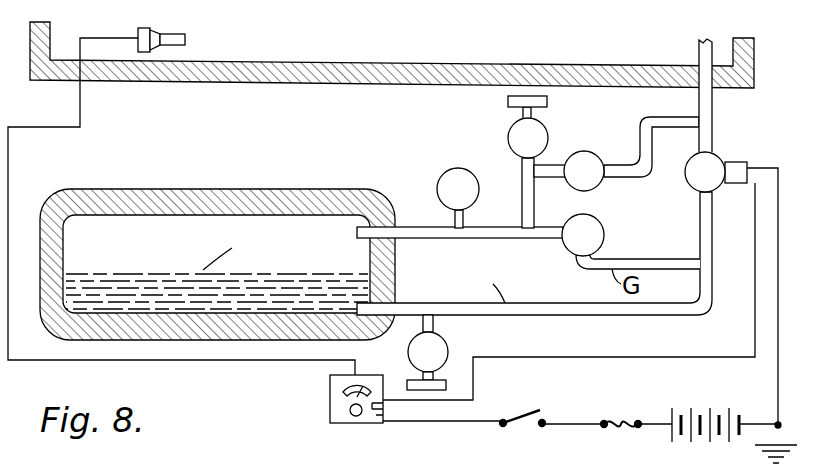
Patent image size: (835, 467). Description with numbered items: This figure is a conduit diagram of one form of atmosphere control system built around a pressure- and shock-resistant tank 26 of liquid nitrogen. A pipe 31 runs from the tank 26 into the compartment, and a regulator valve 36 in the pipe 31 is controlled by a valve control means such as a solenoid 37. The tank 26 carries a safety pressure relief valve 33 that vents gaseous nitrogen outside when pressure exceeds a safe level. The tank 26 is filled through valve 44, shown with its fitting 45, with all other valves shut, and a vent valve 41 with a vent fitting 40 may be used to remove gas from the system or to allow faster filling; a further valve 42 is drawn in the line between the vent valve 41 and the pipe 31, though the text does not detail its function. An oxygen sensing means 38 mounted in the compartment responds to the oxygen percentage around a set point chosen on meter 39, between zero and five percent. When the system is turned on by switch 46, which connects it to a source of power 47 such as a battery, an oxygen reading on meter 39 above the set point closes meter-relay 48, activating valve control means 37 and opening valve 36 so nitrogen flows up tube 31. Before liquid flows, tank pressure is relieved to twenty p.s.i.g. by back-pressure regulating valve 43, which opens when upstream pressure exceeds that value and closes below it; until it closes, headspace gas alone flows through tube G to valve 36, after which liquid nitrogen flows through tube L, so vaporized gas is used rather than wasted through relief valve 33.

The tank 26 is at (191, 225).
The pipe 31 is at (699, 50).
The safety pressure relief valve 33 is at (437, 180).
The regulator valve 36 is at (719, 158).
The valve control means 37 is at (731, 162).
The oxygen sensing means 38 is at (178, 33).
The meter 39 is at (330, 382).
The vent fitting 40 is at (508, 103).
The vent valve 41 is at (508, 137).
The valve 42 is at (587, 151).
The back-pressure regulating valve 43 is at (604, 236).
The valve 44 is at (448, 346).
The valve cap 45 is at (446, 383).
The switch 46 is at (521, 414).
The source of power 47 is at (691, 411).
The meter-relay 48 is at (345, 423).